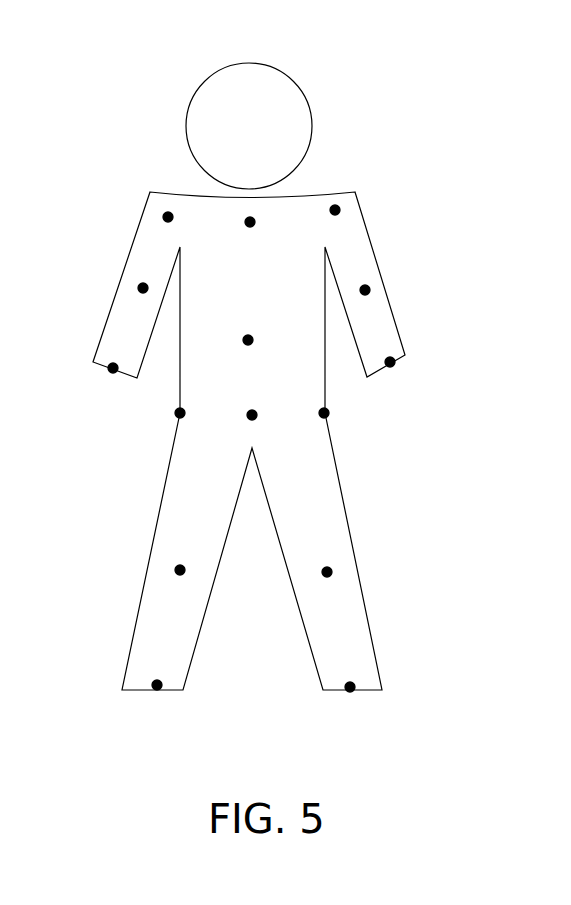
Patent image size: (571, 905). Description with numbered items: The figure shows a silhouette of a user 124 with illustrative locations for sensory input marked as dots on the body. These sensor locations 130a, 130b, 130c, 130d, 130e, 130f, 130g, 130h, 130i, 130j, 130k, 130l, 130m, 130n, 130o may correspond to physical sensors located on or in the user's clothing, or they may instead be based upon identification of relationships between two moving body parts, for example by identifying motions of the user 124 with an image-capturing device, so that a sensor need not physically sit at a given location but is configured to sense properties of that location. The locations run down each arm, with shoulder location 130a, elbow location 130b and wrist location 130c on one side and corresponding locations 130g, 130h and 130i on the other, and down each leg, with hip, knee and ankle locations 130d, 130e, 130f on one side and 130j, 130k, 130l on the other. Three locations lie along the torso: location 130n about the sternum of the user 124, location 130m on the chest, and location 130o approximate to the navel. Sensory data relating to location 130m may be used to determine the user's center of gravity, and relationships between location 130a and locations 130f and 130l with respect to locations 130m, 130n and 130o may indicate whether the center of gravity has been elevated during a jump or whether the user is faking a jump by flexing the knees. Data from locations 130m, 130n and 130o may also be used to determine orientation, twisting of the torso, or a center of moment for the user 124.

The user 124 is at (346, 114).
The sensor location 130a is at (157, 210).
The sensor location 130b is at (132, 282).
The sensor location 130c is at (107, 362).
The sensor location 130d is at (172, 418).
The sensor location 130e is at (167, 563).
The sensor location 130f is at (138, 675).
The sensor location 130g is at (348, 200).
The sensor location 130h is at (380, 281).
The sensor location 130i is at (400, 347).
The sensor location 130j is at (338, 422).
The sensor location 130k is at (345, 563).
The sensor location 130l is at (362, 680).
The sensor location 130m is at (240, 330).
The sensor location 130n is at (243, 228).
The sensor location 130o is at (243, 404).